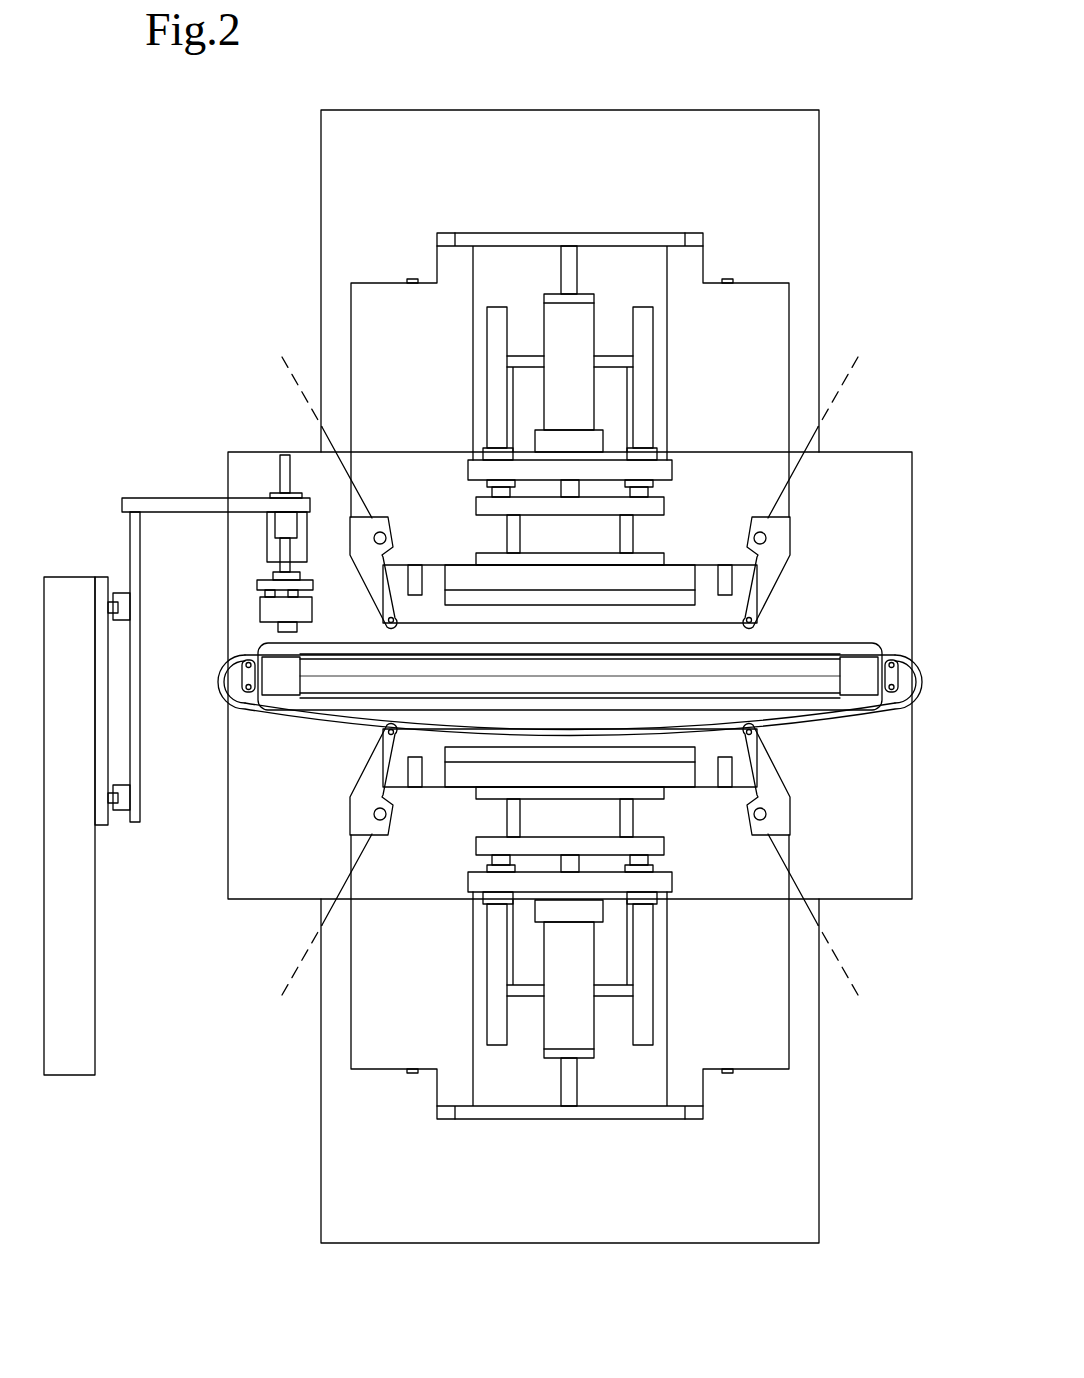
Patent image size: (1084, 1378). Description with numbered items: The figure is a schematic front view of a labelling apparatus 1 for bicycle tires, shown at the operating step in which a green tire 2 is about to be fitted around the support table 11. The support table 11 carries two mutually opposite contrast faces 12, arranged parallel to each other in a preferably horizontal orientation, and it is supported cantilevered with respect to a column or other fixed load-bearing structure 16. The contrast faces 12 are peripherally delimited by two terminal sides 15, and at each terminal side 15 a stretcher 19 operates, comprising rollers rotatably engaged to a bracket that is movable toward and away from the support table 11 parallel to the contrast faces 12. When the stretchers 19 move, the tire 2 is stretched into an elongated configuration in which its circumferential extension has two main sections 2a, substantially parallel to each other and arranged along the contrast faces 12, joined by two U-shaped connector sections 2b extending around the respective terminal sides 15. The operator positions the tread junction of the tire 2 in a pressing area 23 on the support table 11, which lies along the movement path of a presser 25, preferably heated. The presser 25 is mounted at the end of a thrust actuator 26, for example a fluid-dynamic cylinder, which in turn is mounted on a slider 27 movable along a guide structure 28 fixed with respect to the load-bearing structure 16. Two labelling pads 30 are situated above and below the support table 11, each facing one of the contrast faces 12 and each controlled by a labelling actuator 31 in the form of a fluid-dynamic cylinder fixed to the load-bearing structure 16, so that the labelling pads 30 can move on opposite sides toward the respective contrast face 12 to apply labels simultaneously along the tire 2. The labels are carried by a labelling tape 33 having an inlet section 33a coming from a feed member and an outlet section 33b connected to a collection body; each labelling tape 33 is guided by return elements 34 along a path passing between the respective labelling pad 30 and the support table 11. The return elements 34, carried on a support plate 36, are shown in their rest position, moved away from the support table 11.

The labelling apparatus 1 is at (243, 1110).
The tire 2 is at (325, 736).
The main sections 2a is at (861, 655).
The U-shaped connector sections 2b is at (915, 683).
The support table 11 is at (827, 680).
The contrast faces 12 is at (858, 665).
The terminal sides 15 is at (893, 700).
The load-bearing structure 16 is at (819, 155).
The stretcher 19 is at (895, 672).
The pressing area 23 is at (285, 658).
The presser 25 is at (268, 610).
The thrust actuator 26 is at (270, 543).
The slider 27 is at (122, 498).
The guide structure 28 is at (66, 590).
The labelling pad 30 is at (670, 598).
The labelling actuator 31 is at (586, 330).
The labelling tape 33 is at (430, 627).
The inlet section 33a is at (338, 450).
The outlet section 33b is at (790, 460).
The return elements 34 is at (385, 612).
The support plate 36 is at (743, 320).